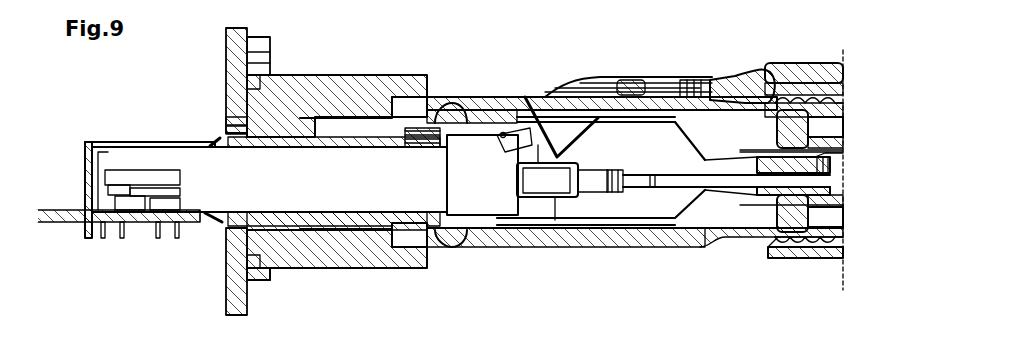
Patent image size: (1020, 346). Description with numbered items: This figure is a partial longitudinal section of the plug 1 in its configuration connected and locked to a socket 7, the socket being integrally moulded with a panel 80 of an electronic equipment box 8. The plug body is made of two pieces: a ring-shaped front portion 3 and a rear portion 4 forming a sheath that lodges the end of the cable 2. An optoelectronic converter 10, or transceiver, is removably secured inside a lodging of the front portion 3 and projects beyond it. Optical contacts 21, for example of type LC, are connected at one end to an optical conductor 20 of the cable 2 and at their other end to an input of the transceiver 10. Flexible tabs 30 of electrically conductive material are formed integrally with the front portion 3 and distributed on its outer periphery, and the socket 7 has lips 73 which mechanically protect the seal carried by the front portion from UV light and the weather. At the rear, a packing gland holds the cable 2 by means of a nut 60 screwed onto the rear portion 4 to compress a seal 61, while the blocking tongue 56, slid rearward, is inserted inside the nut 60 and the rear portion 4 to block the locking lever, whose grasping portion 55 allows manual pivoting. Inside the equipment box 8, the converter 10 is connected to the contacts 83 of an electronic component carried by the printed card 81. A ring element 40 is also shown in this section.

The plug 1 is at (655, 58).
The cable 2 is at (840, 168).
The front portion 3 is at (240, 240).
The rear portion 4 is at (563, 95).
The socket 7 is at (283, 255).
The electronic equipment box 8 is at (68, 160).
The optoelectronic converter 10 is at (157, 165).
The optical conductor 20 is at (700, 160).
The optical contacts 21 is at (567, 185).
The flexible tabs 30 is at (360, 110).
The sealing ring 40 is at (783, 215).
The grasping portion 55 is at (805, 60).
The blocking tongue 56 is at (728, 75).
The nut 60 is at (822, 262).
The seal 61 is at (845, 232).
The lips 73 is at (408, 85).
The panel 80 is at (246, 300).
The printed card 81 is at (74, 225).
The contacts 83 is at (135, 205).